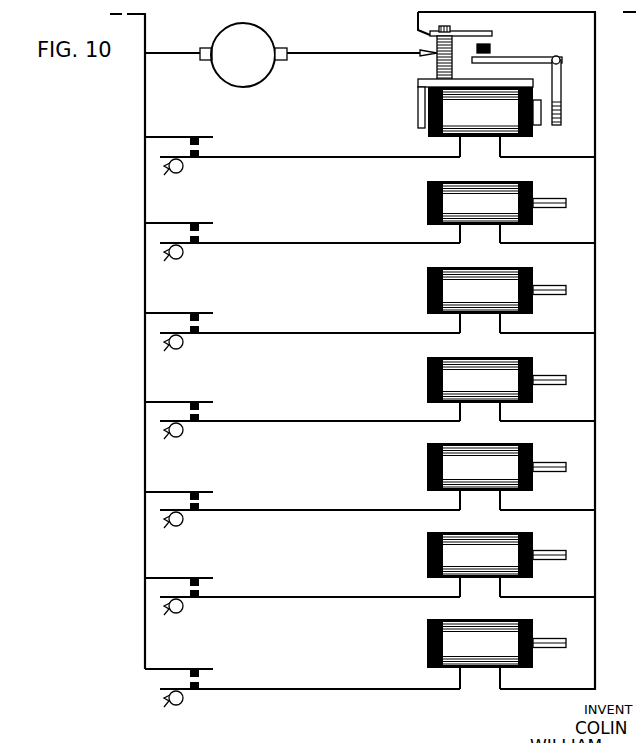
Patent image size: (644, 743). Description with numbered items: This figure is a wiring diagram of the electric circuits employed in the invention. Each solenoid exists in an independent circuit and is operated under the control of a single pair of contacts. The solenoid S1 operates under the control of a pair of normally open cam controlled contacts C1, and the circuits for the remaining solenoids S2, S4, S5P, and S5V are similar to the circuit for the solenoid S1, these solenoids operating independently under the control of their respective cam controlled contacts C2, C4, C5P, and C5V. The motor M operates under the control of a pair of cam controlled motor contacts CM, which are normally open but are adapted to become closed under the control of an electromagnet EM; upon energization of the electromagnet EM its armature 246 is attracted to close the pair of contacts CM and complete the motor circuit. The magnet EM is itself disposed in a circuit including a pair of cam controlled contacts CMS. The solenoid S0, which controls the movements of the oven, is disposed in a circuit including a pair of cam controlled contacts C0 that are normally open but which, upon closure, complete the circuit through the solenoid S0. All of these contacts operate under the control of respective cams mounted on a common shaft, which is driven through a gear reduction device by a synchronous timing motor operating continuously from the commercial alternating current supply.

The armature 246 is at (560, 90).
The motor M is at (291, 55).
The motor contacts CM is at (474, 46).
The electromagnet EM is at (479, 118).
The cam controlled contacts CMS is at (370, 166).
The cam controlled contacts C1 is at (370, 252).
The cam controlled contacts C2 is at (370, 343).
The cam controlled contacts C4 is at (370, 431).
The cam controlled contacts C5P is at (370, 520).
The cam controlled contacts C5V is at (370, 608).
The cam controlled contacts C0 is at (370, 701).
The solenoid S1 is at (496, 212).
The solenoid S2 is at (496, 300).
The solenoid S4 is at (496, 389).
The solenoid S5P is at (496, 476).
The solenoid S5V is at (496, 564).
The solenoid S0 is at (496, 654).